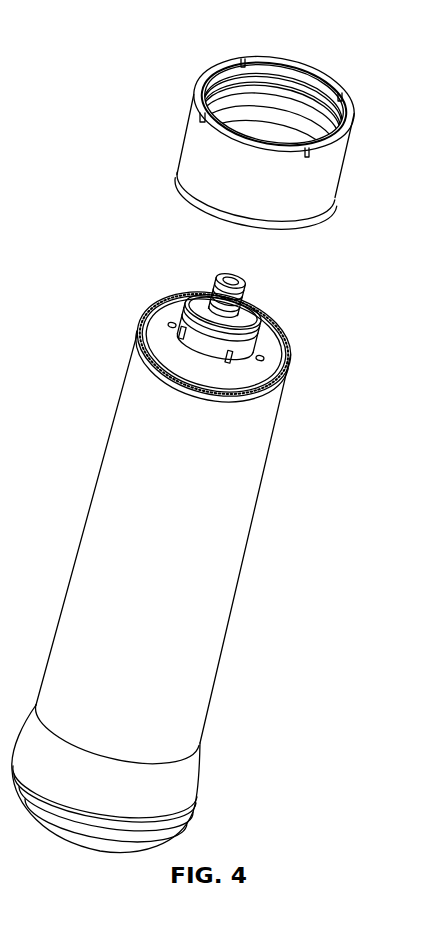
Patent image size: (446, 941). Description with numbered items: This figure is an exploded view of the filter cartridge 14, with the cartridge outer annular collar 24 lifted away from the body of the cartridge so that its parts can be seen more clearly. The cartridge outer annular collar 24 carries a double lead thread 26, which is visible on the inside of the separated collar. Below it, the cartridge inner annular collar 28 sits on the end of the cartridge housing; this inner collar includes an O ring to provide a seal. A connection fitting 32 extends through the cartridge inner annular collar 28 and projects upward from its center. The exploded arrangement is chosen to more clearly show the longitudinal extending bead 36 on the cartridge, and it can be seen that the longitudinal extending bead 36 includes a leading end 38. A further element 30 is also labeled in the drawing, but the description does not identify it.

The filter cartridge 14 is at (127, 112).
The cartridge outer annular collar 24 is at (342, 176).
The double lead thread 26 is at (290, 88).
The cartridge inner annular collar 28 is at (211, 298).
The annular ring 30 is at (150, 316).
The connection fitting 32 is at (247, 284).
The longitudinal extending bead 36 is at (143, 335).
The leading end 38 is at (264, 316).